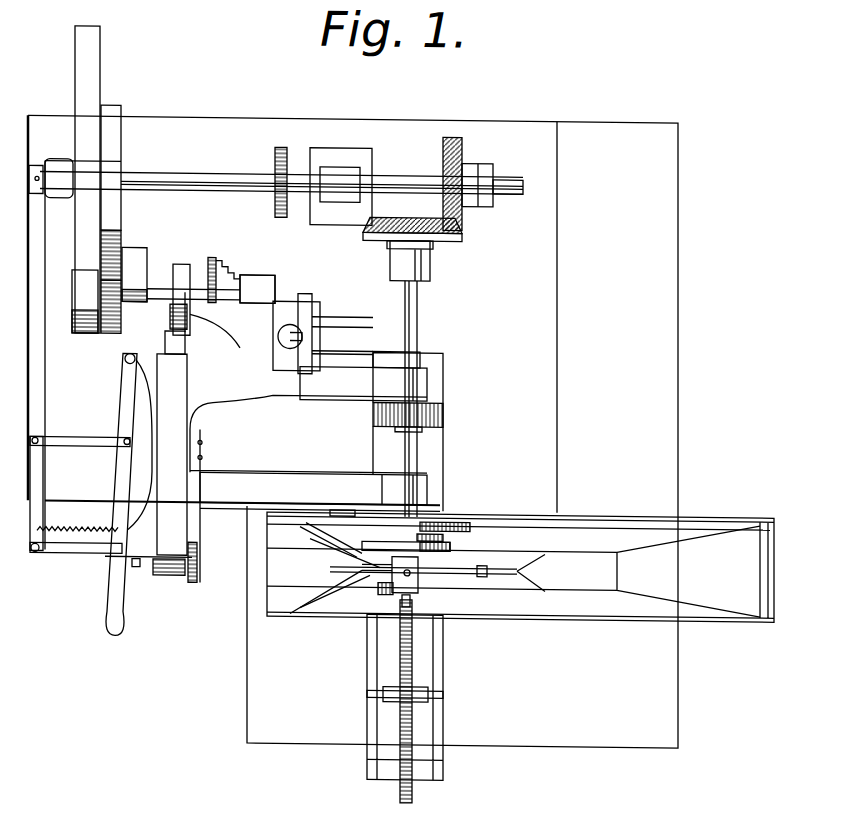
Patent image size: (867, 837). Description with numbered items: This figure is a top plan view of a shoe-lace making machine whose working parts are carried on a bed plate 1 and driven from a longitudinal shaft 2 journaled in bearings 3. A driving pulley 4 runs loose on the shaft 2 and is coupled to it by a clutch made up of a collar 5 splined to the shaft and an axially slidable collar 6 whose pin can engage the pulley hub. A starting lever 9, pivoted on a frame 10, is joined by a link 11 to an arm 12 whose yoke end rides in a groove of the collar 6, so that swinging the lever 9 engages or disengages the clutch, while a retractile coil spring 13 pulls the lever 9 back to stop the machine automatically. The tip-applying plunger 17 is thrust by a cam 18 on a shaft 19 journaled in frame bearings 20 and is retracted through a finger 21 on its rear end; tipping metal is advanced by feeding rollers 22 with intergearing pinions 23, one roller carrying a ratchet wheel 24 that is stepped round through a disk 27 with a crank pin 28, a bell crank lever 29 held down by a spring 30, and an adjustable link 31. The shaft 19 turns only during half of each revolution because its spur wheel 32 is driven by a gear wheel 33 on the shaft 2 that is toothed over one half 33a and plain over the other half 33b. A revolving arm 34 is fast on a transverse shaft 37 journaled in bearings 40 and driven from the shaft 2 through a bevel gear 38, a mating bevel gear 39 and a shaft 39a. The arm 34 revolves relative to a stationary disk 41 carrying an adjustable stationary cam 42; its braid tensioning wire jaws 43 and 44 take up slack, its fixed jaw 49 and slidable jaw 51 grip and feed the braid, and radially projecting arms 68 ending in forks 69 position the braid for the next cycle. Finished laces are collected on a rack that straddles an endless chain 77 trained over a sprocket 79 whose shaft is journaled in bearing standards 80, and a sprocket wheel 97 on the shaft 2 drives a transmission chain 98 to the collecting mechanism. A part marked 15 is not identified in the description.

The bed plate 1 is at (657, 345).
The longitudinal shaft 2 is at (197, 158).
The bearings 3 is at (343, 179).
The driving pulley 4 is at (90, 54).
The collar 5 is at (55, 157).
The collar 6 is at (33, 162).
The starting lever 9 is at (125, 476).
The frame 10 is at (128, 344).
The link 11 is at (77, 439).
The arm 12 is at (35, 409).
The retractile coil spring 13 is at (323, 303).
The ratchet 15 is at (175, 308).
The tip applying plunger 17 is at (188, 357).
The cam 18 is at (182, 258).
The longitudinal shaft 19 is at (157, 281).
The frame bearings 20 is at (133, 277).
The finger 21 is at (183, 316).
The feeding rollers 22 is at (170, 571).
The intergearing pinions 23 is at (137, 567).
The ratchet wheel 24 is at (192, 578).
The disk 27 is at (213, 260).
The crank pin 28 is at (205, 260).
The bell crank lever 29 is at (302, 310).
The spring 30 is at (250, 250).
The link 31 is at (202, 434).
The spur wheel 32 is at (82, 336).
The gear wheel 33 is at (121, 160).
The toothed half 33a is at (111, 229).
The plain half 33b is at (113, 122).
The revolving arm 34 is at (417, 568).
The transverse shaft 37 is at (409, 438).
The bevel gear 38 is at (463, 222).
The bevel gear 39 is at (443, 233).
The shaft 39a is at (409, 303).
The bearings 40 is at (413, 373).
The stationary disk 41 is at (487, 502).
The stationary cam 42 is at (450, 537).
The wire jaw 43 is at (332, 586).
The wire jaw 44 is at (305, 523).
The fixed jaw 49 is at (353, 569).
The slidable jaw 51 is at (332, 506).
The radially projecting arms 68 is at (507, 564).
The forks 69 is at (548, 561).
The endless operating chain 77 is at (410, 757).
The sprocket 79 is at (413, 723).
The bearing standards 80 is at (437, 687).
The sprocket wheel 97 is at (270, 145).
The transmission chain 98 is at (311, 143).